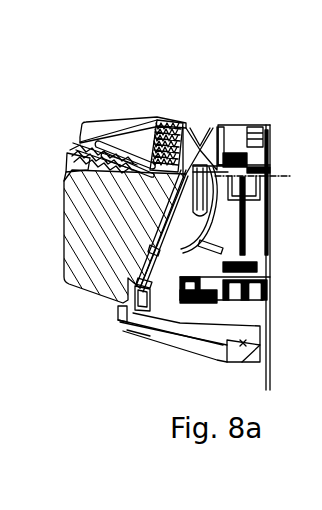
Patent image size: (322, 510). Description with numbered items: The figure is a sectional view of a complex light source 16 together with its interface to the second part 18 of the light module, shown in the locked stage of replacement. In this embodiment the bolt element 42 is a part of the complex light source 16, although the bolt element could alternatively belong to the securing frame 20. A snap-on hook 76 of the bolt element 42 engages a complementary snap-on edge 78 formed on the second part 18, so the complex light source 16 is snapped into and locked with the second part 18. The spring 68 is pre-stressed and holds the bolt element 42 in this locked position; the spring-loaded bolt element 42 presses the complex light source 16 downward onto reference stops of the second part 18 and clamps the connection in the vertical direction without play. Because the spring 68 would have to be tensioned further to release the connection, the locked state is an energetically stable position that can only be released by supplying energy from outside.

The complex light source 16 is at (90, 96).
The bolt element 42 is at (140, 100).
The spring 68 is at (163, 127).
The snap-on edge 78 is at (200, 153).
The snap-on hook 76 is at (222, 160).
The securing frame 20 is at (237, 137).
The second part 18 is at (150, 346).